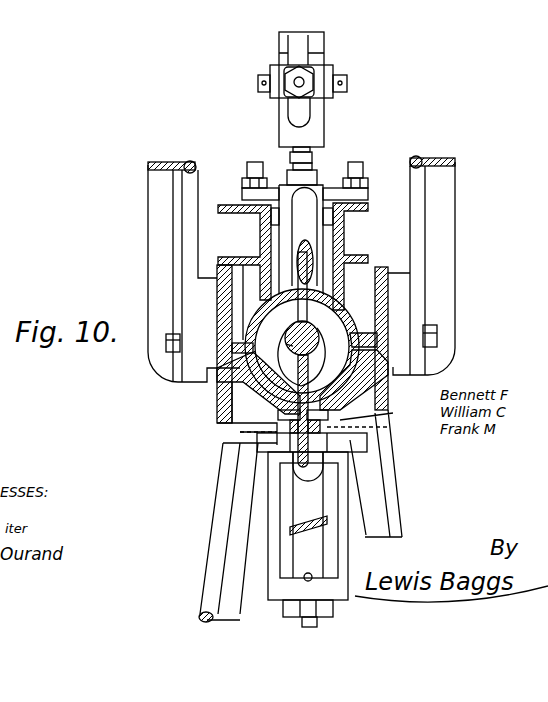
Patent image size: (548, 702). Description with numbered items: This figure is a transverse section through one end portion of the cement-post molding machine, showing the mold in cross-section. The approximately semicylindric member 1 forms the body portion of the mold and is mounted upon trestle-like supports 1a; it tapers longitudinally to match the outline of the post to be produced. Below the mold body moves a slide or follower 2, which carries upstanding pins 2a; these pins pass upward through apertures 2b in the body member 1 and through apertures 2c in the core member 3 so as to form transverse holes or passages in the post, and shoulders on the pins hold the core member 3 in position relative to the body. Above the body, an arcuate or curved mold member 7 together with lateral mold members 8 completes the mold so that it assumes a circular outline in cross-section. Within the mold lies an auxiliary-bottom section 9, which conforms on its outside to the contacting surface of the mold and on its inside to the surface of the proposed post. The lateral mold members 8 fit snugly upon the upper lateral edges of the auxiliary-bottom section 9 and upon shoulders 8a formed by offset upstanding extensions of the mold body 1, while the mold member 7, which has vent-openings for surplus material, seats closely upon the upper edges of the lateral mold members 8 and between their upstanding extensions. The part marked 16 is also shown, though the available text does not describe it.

The semicylindric member 1 is at (302, 355).
The trestle-like supports 1a is at (402, 489).
The slide or follower 2 is at (297, 458).
The upstanding pins 2a is at (167, 500).
The apertures 2b is at (300, 422).
The apertures 2c is at (286, 344).
The core member 3 is at (316, 338).
The arcuate mold member 7 is at (315, 262).
The lateral mold members 8 is at (350, 311).
The shoulders 8a is at (478, 357).
The auxiliary-bottom section 9 is at (275, 372).
The side arms 16 is at (150, 257).